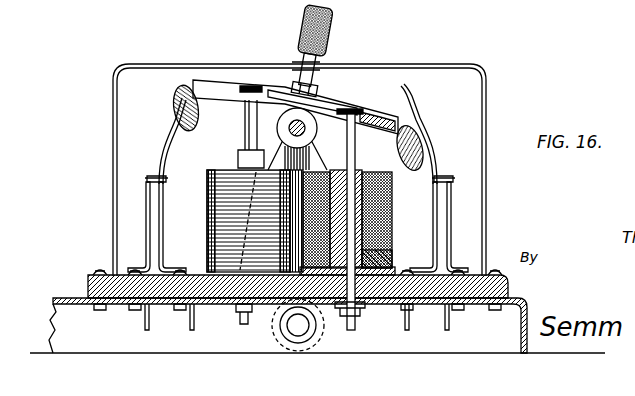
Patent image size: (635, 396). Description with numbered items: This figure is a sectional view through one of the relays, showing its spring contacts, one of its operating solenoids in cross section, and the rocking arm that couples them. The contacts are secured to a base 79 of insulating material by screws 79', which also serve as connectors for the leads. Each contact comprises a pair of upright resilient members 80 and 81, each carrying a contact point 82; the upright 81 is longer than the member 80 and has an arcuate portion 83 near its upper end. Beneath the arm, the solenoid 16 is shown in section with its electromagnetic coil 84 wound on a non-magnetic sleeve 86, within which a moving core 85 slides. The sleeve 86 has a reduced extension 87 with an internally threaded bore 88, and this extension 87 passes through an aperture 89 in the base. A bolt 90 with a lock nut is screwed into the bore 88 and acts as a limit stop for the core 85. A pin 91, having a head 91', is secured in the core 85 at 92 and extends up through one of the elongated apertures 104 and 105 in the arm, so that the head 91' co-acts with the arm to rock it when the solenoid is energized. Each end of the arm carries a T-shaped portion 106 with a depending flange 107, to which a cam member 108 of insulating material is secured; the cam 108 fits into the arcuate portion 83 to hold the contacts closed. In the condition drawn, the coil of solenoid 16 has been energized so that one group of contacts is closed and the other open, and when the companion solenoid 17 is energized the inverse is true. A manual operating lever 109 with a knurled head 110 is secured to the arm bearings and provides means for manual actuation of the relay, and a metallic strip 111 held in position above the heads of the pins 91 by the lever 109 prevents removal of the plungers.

The solenoid 16 is at (398, 217).
The solenoid 17 is at (202, 193).
The base 79 is at (278, 286).
The screws 79' is at (297, 257).
The upright resilient member 80 is at (150, 213).
The upright resilient member 81 is at (164, 228).
The contact point 82 is at (154, 176).
The arcuate portion 83 is at (172, 101).
The electromagnetic coil 84 is at (380, 241).
The moving core 85 is at (238, 156).
The non-magnetic sleeve 86 is at (370, 205).
The reduced extension 87 is at (378, 300).
The internally threaded bore 88 is at (316, 330).
The aperture 89 is at (353, 273).
The bolt 90 is at (244, 320).
The pin 91 is at (366, 222).
The head 91' is at (304, 90).
The securing point 92 is at (362, 170).
The elongated aperture 104 is at (227, 91).
The elongated aperture 105 is at (370, 119).
The T-shaped portion 106 is at (204, 78).
The depending flange 107 is at (245, 127).
The cam member 108 is at (180, 92).
The manual operating lever 109 is at (287, 66).
The knurled head 110 is at (328, 24).
The metallic strip 111 is at (331, 100).